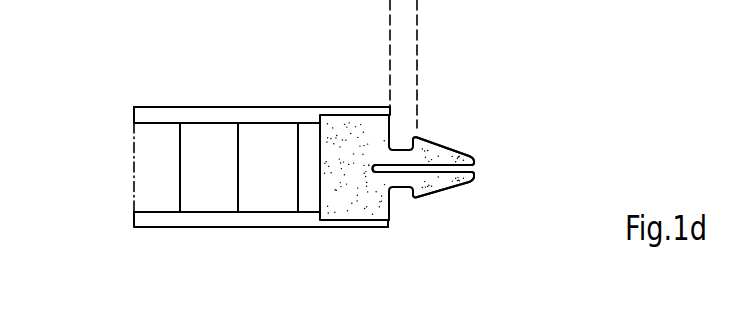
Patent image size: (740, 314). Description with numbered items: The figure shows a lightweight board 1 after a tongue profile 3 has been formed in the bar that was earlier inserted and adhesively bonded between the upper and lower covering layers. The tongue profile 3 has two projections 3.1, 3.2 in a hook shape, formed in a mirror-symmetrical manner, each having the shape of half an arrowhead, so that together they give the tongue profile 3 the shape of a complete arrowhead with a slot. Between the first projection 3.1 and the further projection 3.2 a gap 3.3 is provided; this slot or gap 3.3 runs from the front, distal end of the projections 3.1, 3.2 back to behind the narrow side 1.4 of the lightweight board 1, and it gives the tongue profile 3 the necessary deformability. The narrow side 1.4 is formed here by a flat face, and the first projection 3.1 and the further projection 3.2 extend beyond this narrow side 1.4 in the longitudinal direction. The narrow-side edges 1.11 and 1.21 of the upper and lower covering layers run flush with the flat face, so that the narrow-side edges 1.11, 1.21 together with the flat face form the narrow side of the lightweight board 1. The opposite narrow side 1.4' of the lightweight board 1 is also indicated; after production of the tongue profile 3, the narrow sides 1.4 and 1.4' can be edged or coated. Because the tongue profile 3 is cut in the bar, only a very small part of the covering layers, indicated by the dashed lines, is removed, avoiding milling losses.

The lightweight board 1 is at (92, 115).
The narrow side 1.4' is at (262, 84).
The narrow-side edge 1.11 is at (390, 109).
The narrow-side edge 1.21 is at (390, 223).
The narrow side 1.4 is at (387, 203).
The tongue profile 3 is at (474, 123).
The first projection 3.1 is at (430, 153).
The further projection 3.2 is at (430, 185).
The gap 3.3 is at (488, 167).